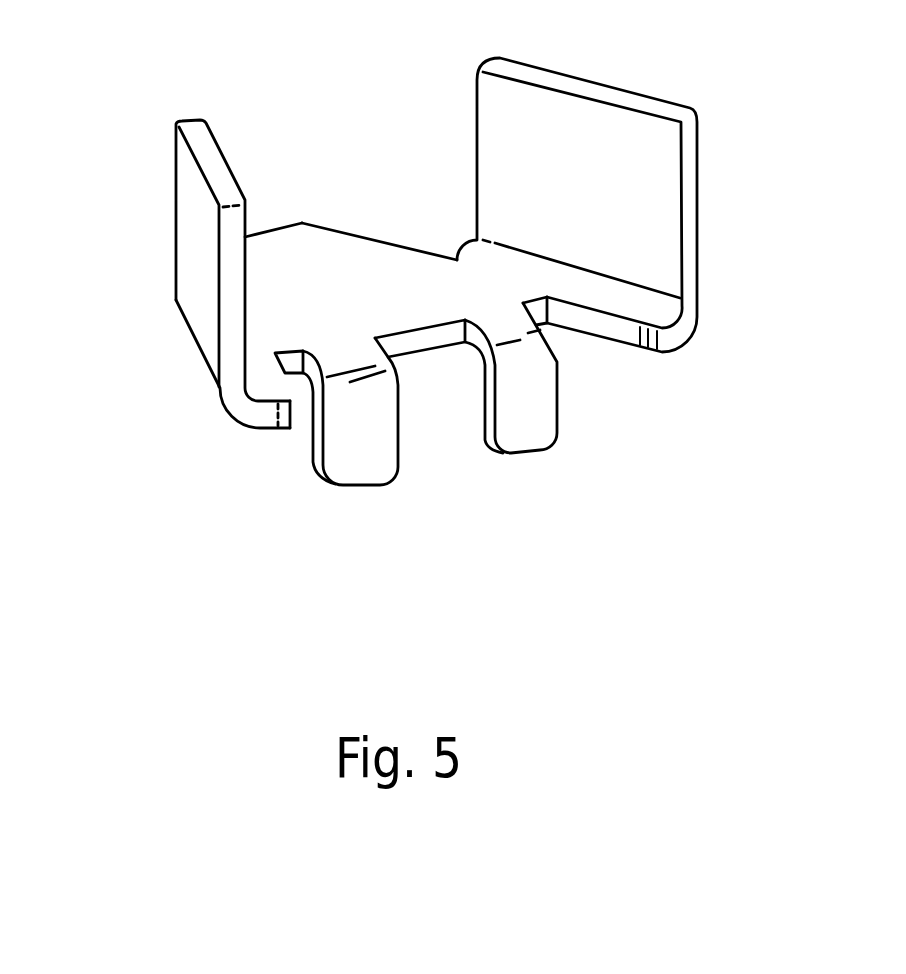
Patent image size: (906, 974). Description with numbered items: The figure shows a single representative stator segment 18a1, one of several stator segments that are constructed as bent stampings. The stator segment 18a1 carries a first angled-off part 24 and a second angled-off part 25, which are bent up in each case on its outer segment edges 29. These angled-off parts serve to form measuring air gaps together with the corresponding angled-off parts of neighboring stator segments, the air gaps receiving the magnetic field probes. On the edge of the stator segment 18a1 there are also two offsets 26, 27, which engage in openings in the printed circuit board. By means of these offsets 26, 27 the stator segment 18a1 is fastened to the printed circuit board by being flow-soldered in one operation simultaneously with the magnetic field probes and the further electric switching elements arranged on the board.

The stator segment 18a1 is at (292, 255).
The first angled-off part 24 is at (665, 232).
The second angled-off part 25 is at (190, 207).
The offset 26 is at (530, 435).
The offset 27 is at (365, 463).
The outer segment edge 29 is at (358, 237).